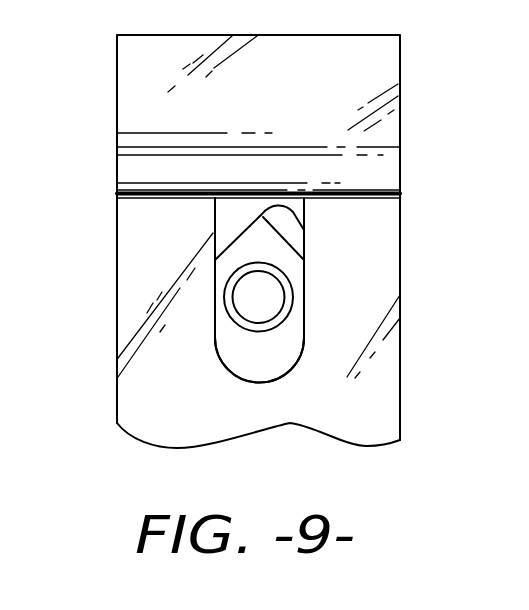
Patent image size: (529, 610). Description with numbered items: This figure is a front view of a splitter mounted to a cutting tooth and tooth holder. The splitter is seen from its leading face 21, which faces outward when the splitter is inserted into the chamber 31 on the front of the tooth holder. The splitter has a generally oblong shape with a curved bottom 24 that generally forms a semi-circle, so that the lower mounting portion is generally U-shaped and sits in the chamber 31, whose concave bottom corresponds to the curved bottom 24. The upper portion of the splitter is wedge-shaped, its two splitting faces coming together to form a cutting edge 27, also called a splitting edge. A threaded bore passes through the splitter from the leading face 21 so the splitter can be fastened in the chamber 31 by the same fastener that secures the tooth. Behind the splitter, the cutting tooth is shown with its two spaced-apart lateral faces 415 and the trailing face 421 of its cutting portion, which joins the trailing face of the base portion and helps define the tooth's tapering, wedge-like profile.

The lateral faces 415 is at (400, 168).
The trailing face 421 is at (275, 106).
The leading face 21 is at (273, 345).
The cutting edge 27 is at (303, 217).
The chamber 31 is at (232, 217).
The curved bottom 24 is at (255, 383).